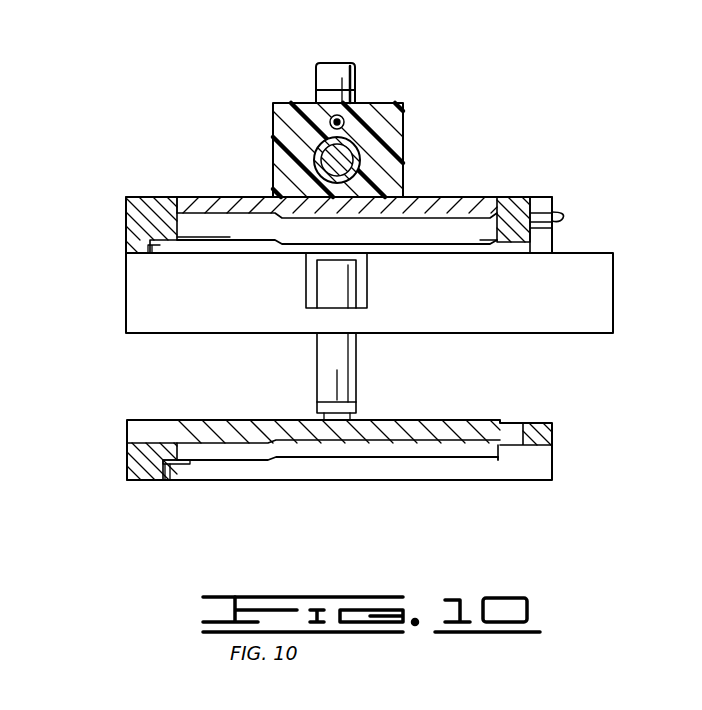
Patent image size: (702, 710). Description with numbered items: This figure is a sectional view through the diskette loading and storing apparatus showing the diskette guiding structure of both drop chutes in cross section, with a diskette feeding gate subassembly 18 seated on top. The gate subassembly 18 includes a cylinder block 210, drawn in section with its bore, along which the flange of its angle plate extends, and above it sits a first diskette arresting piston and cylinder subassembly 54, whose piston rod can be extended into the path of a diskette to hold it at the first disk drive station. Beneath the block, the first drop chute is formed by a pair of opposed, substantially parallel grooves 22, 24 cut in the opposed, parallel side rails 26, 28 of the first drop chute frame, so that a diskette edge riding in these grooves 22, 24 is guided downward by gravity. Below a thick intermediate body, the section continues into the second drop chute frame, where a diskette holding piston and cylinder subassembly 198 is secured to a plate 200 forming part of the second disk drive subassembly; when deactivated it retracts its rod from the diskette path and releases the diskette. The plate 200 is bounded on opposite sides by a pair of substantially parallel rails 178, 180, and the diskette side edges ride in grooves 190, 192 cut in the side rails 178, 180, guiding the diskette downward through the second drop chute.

The diskette feeding gate subassembly 18 is at (262, 106).
The first diskette arresting piston and cylinder subassembly 54 is at (353, 68).
The cylinder block 210 is at (397, 118).
The groove 22 is at (200, 220).
The groove 24 is at (485, 226).
The side rail 26 is at (513, 232).
The side rail 28 is at (137, 229).
The diskette holding piston and cylinder subassembly 198 is at (358, 357).
The plate 200 is at (253, 436).
The groove 190 is at (182, 452).
The rail 180 is at (137, 466).
The rail 178 is at (540, 465).
The groove 192 is at (483, 452).